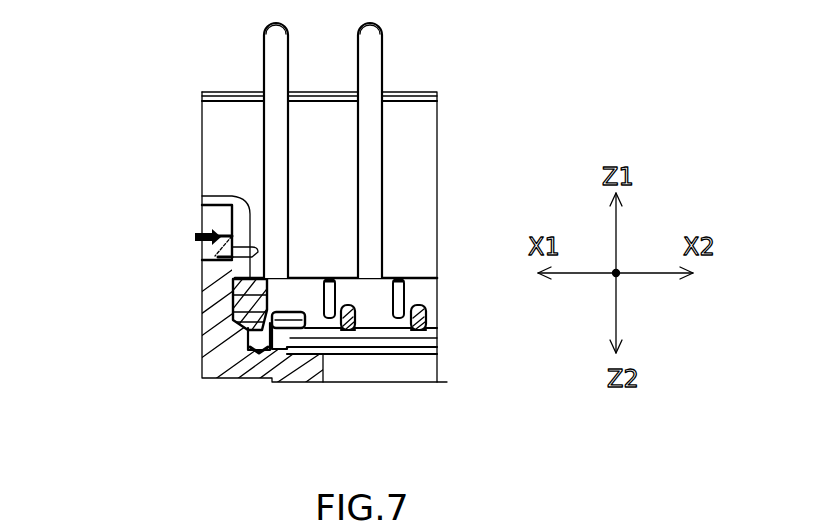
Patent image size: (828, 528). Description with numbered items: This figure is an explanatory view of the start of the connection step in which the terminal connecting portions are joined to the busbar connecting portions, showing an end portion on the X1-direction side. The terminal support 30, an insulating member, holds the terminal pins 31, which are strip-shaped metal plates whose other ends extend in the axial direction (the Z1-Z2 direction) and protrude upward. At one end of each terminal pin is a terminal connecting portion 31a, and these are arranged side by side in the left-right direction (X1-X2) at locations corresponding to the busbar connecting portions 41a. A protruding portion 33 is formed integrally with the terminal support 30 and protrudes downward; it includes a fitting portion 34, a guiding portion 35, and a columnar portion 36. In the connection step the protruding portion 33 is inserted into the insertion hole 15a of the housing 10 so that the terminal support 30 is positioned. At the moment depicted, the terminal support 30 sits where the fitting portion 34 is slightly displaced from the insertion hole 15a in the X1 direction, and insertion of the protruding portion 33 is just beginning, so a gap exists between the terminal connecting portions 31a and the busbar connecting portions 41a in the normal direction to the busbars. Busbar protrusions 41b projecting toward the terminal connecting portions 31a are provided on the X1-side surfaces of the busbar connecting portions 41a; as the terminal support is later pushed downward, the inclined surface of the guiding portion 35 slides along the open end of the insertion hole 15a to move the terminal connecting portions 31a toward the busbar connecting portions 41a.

The housing 10 is at (217, 358).
The insertion hole 15a is at (249, 348).
The terminal support 30 is at (434, 296).
The terminal pin 31 is at (367, 77).
The terminal connecting portion 31a is at (342, 278).
The protruding portion 33 is at (105, 310).
The fitting portion 34 is at (230, 297).
The guiding portion 35 is at (230, 316).
The columnar portion 36 is at (233, 330).
The busbar connecting portion 41a is at (355, 333).
The busbar protrusion 41b is at (345, 332).